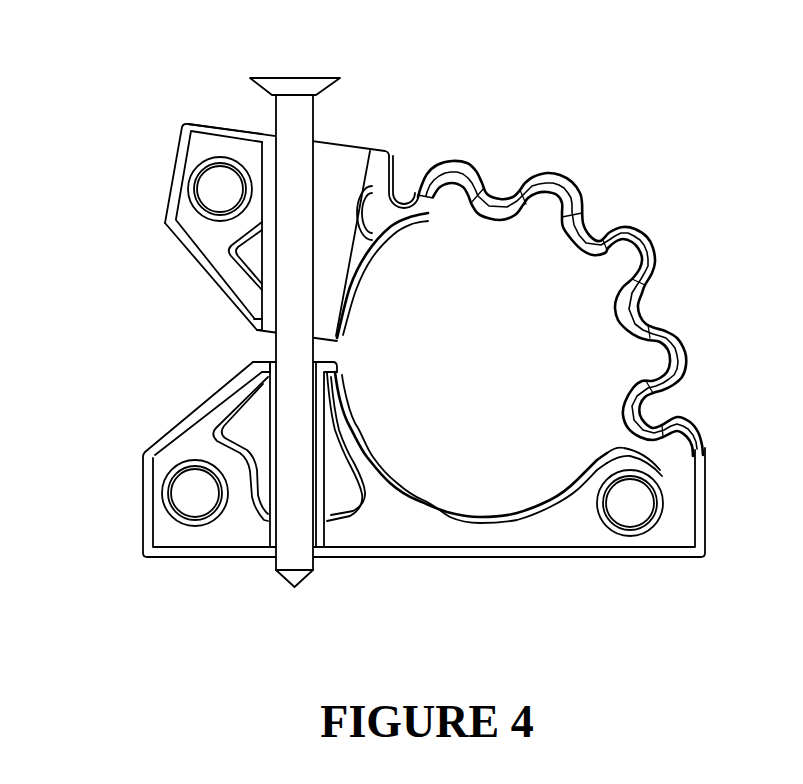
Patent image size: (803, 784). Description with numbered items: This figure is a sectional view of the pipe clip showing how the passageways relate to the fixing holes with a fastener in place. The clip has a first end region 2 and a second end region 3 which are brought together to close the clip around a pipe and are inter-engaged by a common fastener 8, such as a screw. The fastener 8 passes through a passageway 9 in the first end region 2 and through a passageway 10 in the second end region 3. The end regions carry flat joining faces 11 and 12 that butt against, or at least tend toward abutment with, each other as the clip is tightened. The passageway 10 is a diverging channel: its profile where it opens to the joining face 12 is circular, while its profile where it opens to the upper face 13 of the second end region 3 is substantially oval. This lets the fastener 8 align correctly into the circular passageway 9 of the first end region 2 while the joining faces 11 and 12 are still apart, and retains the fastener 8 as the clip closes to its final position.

The first end region 2 is at (137, 508).
The second end region 3 is at (156, 186).
The fastener 8 is at (300, 72).
The passageway 9 is at (323, 569).
The passageway 10 is at (340, 140).
The joining face 11 is at (256, 360).
The joining face 12 is at (251, 333).
The upper face 13 is at (212, 114).